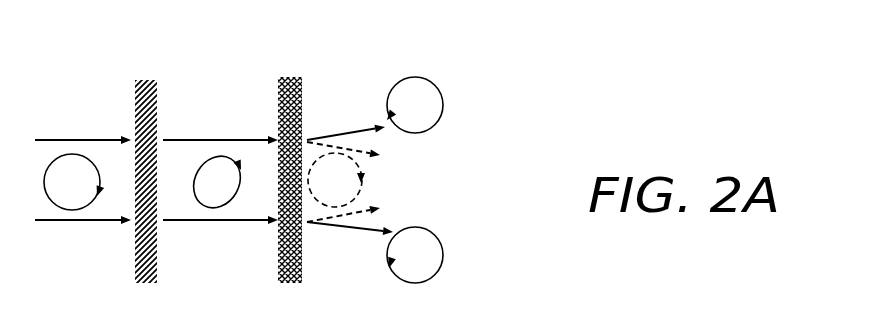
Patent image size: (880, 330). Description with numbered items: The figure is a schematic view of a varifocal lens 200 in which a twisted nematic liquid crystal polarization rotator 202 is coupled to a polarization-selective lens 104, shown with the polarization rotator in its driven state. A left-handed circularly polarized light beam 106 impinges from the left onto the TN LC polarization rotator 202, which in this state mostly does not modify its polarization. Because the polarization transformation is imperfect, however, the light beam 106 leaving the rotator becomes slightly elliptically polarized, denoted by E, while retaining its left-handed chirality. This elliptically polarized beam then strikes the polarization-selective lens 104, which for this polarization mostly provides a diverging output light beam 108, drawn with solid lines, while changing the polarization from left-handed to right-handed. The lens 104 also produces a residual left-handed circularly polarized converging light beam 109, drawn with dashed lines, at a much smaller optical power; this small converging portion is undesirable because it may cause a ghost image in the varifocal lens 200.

The varifocal lens 200 is at (238, 85).
The TN LC polarization rotator 202 is at (146, 79).
The polarization-selective lens 104 is at (291, 77).
The LH circularly polarized light beam 106 is at (70, 139).
The diverging output light beam 108 is at (344, 134).
The converging light beam 109 is at (352, 214).